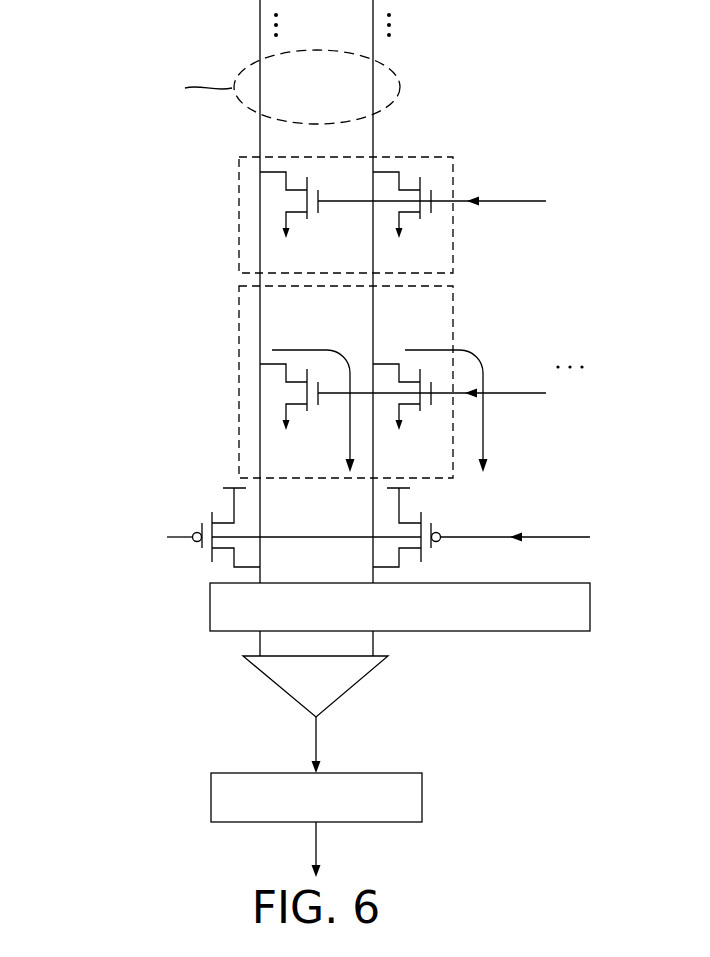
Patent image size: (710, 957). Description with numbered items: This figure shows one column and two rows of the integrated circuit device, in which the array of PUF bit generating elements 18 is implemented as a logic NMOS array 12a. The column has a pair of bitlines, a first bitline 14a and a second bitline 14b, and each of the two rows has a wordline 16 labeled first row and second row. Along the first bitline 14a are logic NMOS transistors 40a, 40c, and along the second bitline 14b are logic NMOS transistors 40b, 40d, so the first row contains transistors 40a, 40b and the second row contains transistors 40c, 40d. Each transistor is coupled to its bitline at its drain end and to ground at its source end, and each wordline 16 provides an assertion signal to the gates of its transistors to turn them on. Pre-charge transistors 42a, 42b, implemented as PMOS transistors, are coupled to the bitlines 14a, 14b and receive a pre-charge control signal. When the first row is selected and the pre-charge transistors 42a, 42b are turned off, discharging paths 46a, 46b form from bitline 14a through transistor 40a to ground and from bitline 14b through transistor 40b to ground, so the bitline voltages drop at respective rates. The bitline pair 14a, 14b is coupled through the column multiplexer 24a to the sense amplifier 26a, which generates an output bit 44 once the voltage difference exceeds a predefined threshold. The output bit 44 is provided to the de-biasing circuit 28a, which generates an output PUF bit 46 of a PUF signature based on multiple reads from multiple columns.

The logic NMOS array 12a is at (497, 41).
The first bitline 14a is at (259, 23).
The second bitline 14b is at (372, 23).
The wordline 16 is at (513, 200).
The PUF bit generating element 18 is at (238, 213).
The logic NMOS transistor 40a is at (314, 408).
The logic NMOS transistor 40b is at (427, 408).
The logic NMOS transistor 40c is at (314, 216).
The logic NMOS transistor 40d is at (427, 216).
The discharging path 46a is at (322, 348).
The discharging path 46b is at (426, 348).
The pre-charge transistor 42a is at (232, 500).
The pre-charge transistor 42b is at (401, 500).
The column multiplexer 24a is at (590, 605).
The sense amplifier 26a is at (277, 688).
The output bit 44 is at (317, 735).
The de-biasing circuit 28a is at (422, 797).
The output PUF bit 46 is at (317, 840).